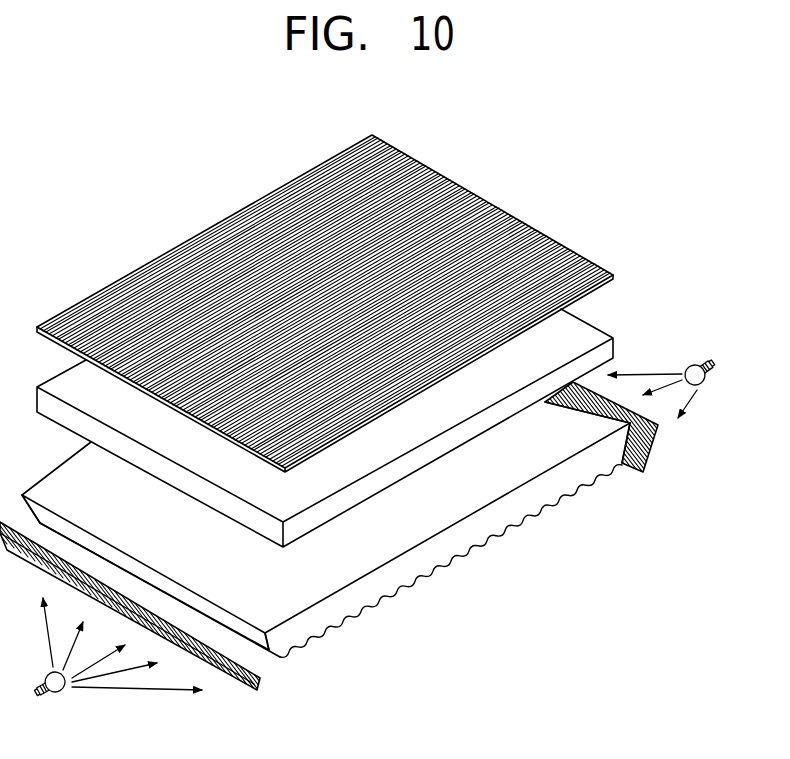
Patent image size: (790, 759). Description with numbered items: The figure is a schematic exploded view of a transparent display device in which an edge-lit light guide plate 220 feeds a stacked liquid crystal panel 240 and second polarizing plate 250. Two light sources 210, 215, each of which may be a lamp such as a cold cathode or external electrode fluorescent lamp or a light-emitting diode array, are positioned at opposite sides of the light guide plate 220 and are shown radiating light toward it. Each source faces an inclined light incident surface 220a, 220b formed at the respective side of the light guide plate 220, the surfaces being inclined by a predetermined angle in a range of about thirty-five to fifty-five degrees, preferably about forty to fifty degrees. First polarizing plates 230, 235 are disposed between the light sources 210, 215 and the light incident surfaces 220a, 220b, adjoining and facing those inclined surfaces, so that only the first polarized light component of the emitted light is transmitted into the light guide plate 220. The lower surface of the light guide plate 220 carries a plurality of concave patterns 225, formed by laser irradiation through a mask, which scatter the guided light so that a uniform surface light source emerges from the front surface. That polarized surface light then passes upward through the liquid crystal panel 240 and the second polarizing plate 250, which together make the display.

The light source 210 is at (65, 693).
The light source 215 is at (708, 378).
The light guide plate 220 is at (362, 590).
The light incident surface 220a is at (270, 652).
The light incident surface 220b is at (623, 468).
The concave patterns 225 is at (327, 630).
The first polarizing plate 230 is at (238, 677).
The first polarizing plate 235 is at (648, 467).
The liquid crystal panel 240 is at (608, 350).
The second polarizing plate 250 is at (617, 278).